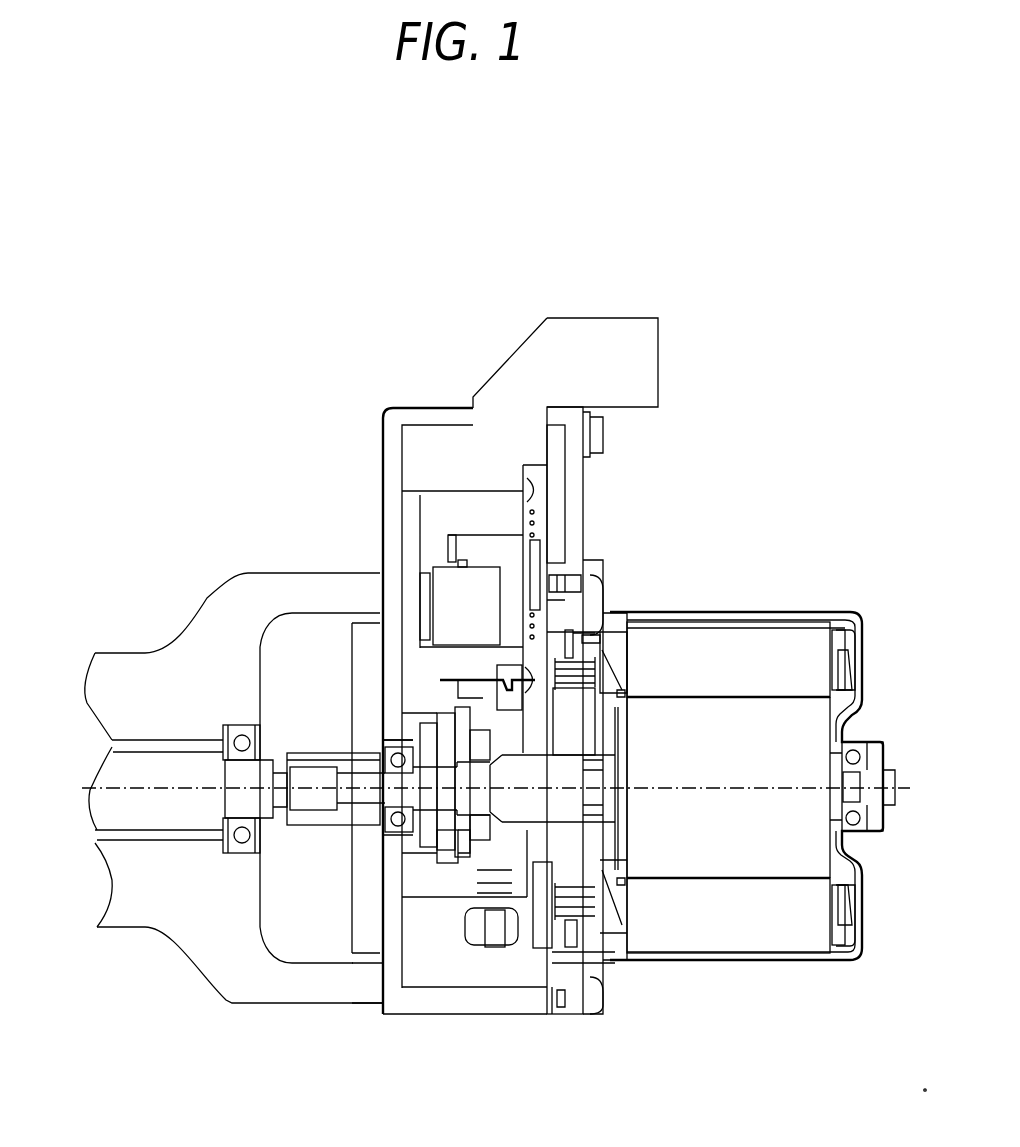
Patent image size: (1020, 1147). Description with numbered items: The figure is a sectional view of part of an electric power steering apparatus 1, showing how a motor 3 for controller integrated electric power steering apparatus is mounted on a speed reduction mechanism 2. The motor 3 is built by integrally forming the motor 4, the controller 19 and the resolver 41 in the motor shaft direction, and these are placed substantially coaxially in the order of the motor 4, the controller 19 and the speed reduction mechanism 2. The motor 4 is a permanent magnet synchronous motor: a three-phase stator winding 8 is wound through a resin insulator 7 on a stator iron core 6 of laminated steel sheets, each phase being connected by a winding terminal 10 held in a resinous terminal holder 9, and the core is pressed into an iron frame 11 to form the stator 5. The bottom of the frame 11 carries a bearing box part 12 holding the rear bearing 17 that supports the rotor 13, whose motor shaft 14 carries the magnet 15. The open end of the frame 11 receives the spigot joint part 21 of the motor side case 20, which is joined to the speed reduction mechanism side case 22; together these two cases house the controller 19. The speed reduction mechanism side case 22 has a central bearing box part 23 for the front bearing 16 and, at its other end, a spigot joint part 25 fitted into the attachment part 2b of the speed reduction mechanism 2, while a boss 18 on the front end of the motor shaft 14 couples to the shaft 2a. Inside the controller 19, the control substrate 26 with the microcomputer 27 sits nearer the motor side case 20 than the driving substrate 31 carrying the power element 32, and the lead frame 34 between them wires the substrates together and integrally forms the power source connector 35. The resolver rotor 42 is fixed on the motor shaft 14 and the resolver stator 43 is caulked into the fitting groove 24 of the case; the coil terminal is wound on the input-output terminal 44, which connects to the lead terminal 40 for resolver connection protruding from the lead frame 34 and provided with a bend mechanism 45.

The electric power steering apparatus 1 is at (257, 403).
The speed reduction mechanism 2 is at (122, 668).
The shaft 2a is at (93, 820).
The attachment part 2b is at (332, 585).
The motor for controller integrated electric power steering apparatus 3 is at (745, 472).
The motor 4 is at (723, 1015).
The stator 5 is at (703, 640).
The stator iron core 6 is at (802, 632).
The insulator 7 is at (840, 635).
The three-phase stator winding 8 is at (843, 663).
The terminal holder 9 is at (562, 693).
The winding terminal 10 is at (593, 647).
The frame 11 is at (745, 612).
The bearing box part 12 is at (873, 823).
The rotor 13 is at (793, 860).
The motor shaft 14 is at (578, 808).
The magnet 15 is at (707, 860).
The front bearing 16 is at (387, 833).
The rear bearing 17 is at (863, 743).
The boss 18 is at (313, 760).
The controller 19 is at (413, 352).
The motor side case 20 is at (580, 527).
The spigot joint part 21 is at (610, 612).
The speed reduction mechanism side case 22 is at (468, 1007).
The bearing box part 23 is at (385, 755).
The fitting groove 24 is at (437, 820).
The spigot joint part 25 is at (372, 967).
The control substrate 26 is at (530, 510).
The microcomputer 27 is at (540, 553).
The driving substrate 31 is at (410, 523).
The power element 32 is at (423, 590).
The lead frame 34 is at (440, 500).
The power source connector 35 is at (588, 335).
The lead terminal for resolver connection 40 is at (463, 677).
The resolver 41 is at (473, 838).
The resolver rotor 42 is at (447, 753).
The resolver stator 43 is at (448, 853).
The input-output terminal 44 is at (473, 700).
The bend mechanism 45 is at (507, 680).